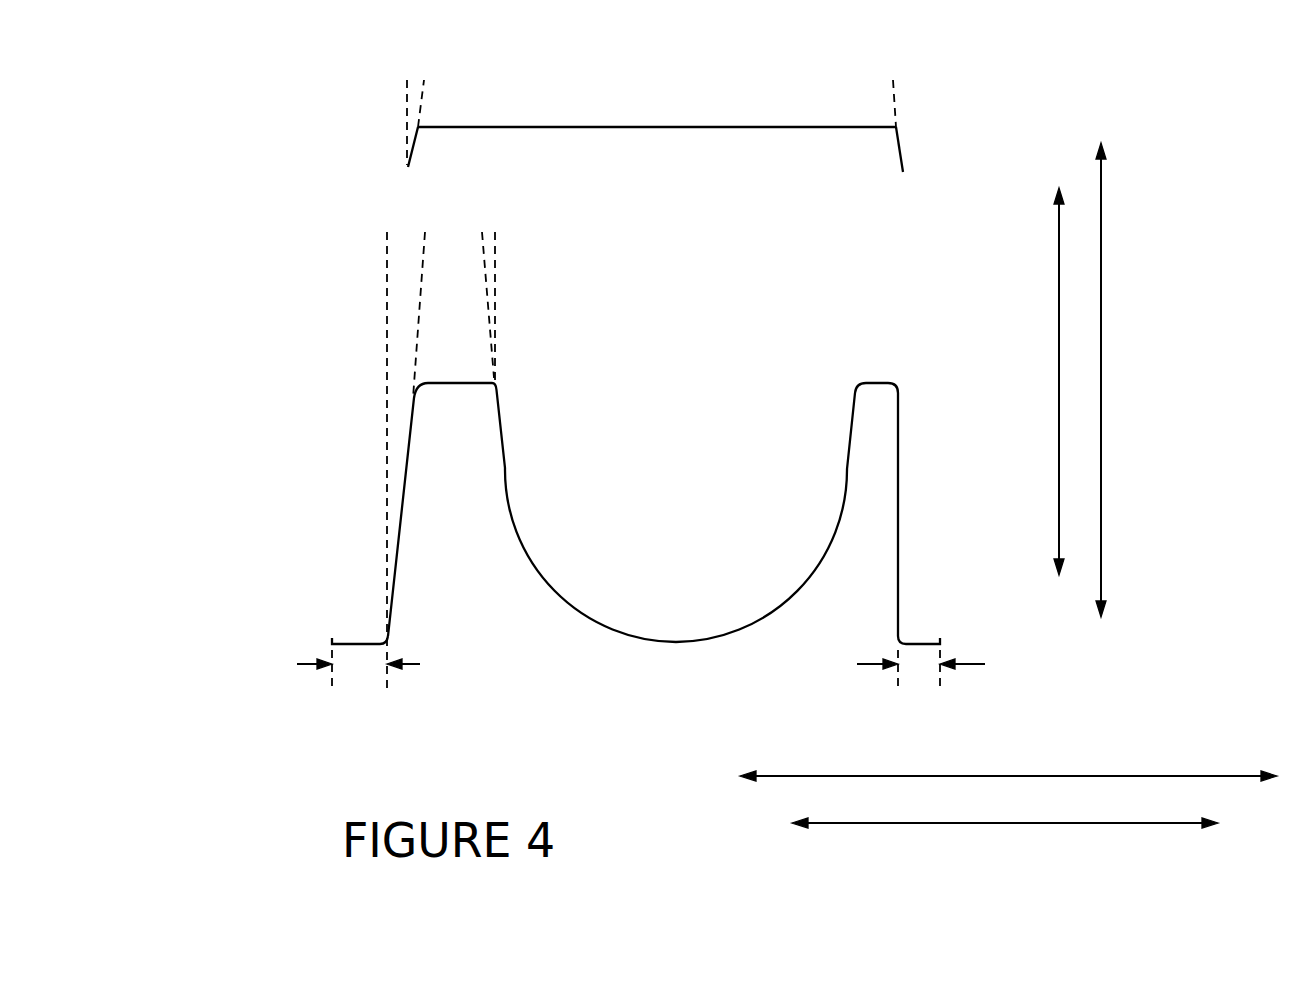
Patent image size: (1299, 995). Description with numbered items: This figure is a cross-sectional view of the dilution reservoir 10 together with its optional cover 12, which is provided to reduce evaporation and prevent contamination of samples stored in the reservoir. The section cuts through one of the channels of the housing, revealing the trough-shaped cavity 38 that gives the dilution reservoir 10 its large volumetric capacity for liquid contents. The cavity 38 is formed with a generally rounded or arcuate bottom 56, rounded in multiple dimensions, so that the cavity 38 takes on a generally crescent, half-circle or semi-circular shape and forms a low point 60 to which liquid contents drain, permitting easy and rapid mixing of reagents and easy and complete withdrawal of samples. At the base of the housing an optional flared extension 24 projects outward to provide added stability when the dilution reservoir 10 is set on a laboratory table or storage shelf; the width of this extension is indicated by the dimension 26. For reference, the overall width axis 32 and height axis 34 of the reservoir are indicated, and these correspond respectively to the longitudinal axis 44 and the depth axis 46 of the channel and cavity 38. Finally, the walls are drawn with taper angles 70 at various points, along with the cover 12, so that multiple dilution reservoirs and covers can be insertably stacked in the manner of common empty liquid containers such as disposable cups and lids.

The dilution reservoir 10 is at (345, 467).
The cover 12 is at (903, 155).
The flared extension 24 is at (362, 640).
The flange width 26 is at (620, 460).
The width axis 32 is at (1023, 823).
The height axis 34 is at (1101, 459).
The cavity 38 is at (746, 559).
The longitudinal axis 44 is at (1013, 776).
The depth axis 46 is at (1059, 423).
The bottom 56 is at (627, 537).
The low point 60 is at (663, 642).
The taper angle 70 is at (490, 250).